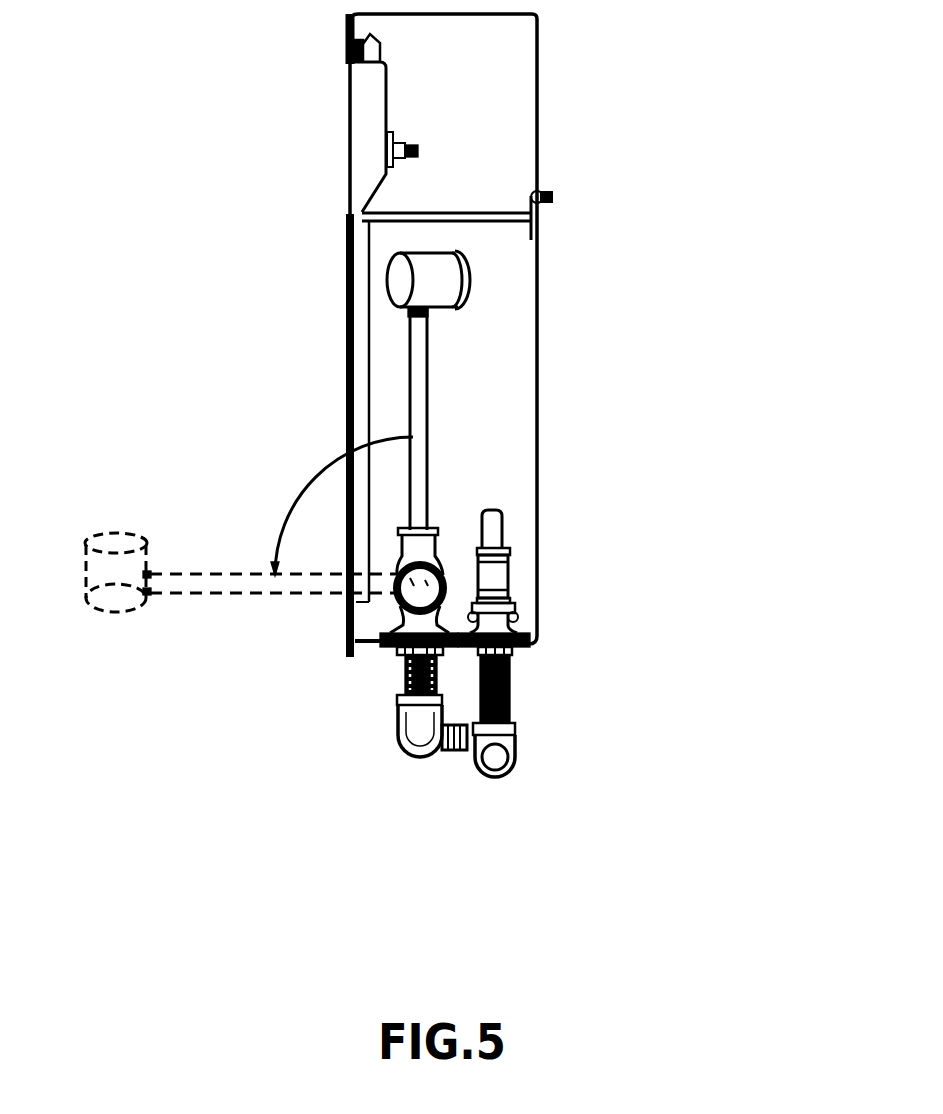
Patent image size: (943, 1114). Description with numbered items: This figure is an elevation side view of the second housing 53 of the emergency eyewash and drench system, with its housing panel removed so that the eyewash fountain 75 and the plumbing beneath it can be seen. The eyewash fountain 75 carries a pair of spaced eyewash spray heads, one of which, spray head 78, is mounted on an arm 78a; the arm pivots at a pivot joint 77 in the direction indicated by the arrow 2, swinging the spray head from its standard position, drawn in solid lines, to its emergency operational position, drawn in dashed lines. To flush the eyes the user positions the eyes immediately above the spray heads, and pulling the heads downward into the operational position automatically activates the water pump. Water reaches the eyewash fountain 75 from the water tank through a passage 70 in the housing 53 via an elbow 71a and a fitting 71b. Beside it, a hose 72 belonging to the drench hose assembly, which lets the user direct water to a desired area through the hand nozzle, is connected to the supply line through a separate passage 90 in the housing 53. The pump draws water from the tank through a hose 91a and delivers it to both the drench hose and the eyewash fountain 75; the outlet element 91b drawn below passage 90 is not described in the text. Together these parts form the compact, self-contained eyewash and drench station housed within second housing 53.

The second housing 53 is at (517, 84).
The eyewash fountain 75 is at (455, 238).
The eyewash spray head 78 is at (443, 295).
The arm 78a is at (420, 413).
The arrow 2 is at (315, 482).
The pivot joint 77 is at (437, 548).
The hose 72 is at (495, 527).
The passage 70 is at (388, 647).
The elbow 71a is at (402, 737).
The fitting 71b is at (457, 750).
The passage 90 is at (515, 647).
The hose 91a is at (503, 739).
The fill valve outlet opening 91b is at (500, 760).